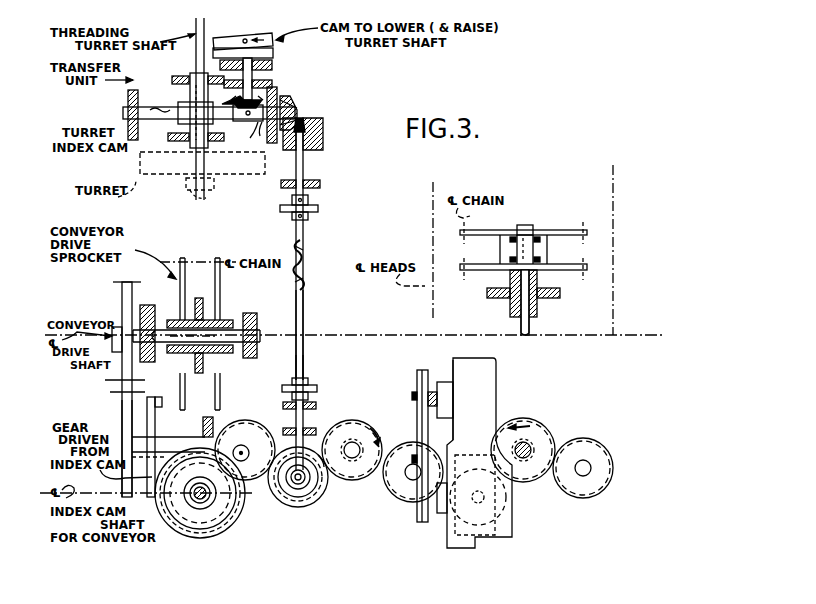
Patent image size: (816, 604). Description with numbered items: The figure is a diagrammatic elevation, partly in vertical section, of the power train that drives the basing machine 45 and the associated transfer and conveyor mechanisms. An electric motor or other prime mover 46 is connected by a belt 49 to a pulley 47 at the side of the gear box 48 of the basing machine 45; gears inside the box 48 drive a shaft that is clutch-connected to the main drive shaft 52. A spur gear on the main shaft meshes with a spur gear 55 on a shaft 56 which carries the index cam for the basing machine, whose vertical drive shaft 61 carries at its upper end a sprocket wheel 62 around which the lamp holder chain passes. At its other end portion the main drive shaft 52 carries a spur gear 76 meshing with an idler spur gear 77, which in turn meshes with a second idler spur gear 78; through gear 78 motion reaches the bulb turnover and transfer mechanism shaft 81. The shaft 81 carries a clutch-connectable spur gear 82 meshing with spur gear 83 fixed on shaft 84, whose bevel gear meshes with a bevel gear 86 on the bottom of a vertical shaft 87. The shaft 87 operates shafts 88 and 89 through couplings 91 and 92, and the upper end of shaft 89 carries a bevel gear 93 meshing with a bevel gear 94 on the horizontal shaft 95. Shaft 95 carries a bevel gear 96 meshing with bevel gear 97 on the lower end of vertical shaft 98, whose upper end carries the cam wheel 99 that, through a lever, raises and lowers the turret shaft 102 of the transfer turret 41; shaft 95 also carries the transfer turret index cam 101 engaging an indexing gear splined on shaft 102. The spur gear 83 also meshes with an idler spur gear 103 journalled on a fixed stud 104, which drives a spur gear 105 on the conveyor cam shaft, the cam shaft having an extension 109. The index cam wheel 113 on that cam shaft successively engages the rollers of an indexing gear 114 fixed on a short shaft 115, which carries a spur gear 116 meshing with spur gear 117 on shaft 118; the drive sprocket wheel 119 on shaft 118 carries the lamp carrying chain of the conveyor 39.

The turret shaft 102 is at (205, 30).
The transfer turret 41 is at (190, 70).
The cam wheel 99 is at (272, 44).
The vertical shaft 98 is at (252, 78).
The transfer turret index cam 101 is at (197, 127).
The bevel gear 97 is at (250, 124).
The horizontal shaft 95 is at (249, 136).
The bevel gear 96 is at (252, 136).
The bevel gear 94 is at (292, 105).
The bevel gear 93 is at (312, 126).
The shaft 89 is at (303, 170).
The coupling 92 is at (318, 215).
The shaft 88 is at (303, 330).
The coupling 91 is at (311, 372).
The vertical shaft 87 is at (310, 410).
The drive sprocket wheel 119 is at (204, 305).
The shaft 118 is at (115, 328).
The spur gear 117 is at (122, 382).
The spur gear 116 is at (122, 418).
The conveyor 39 is at (178, 375).
The indexing gear 114 is at (164, 447).
The short shaft 115 is at (192, 442).
The index cam wheel 113 is at (176, 497).
The extension 109 is at (200, 500).
The spur gear 105 is at (225, 520).
The idler spur gear 103 is at (266, 421).
The fixed stud 104 is at (264, 444).
The shaft 84 is at (296, 480).
The spur gear 83 is at (320, 493).
The bevel gear 86 is at (327, 438).
The spur gear 82 is at (372, 428).
The bulb turnover and transfer mechanism shaft 81 is at (355, 458).
The idler spur gear 78 is at (395, 495).
The belt 49 is at (417, 415).
The pulley 47 is at (440, 382).
The gear box 48 is at (487, 384).
The electric motor 46 is at (455, 545).
The idler spur gear 77 is at (505, 525).
The spur gear 76 is at (545, 435).
The main drive shaft 52 is at (523, 460).
The spur gear 55 is at (598, 487).
The shaft 56 is at (582, 476).
The basing machine 45 is at (590, 213).
The vertical drive shaft 61 is at (525, 228).
The sprocket wheel 62 is at (516, 216).